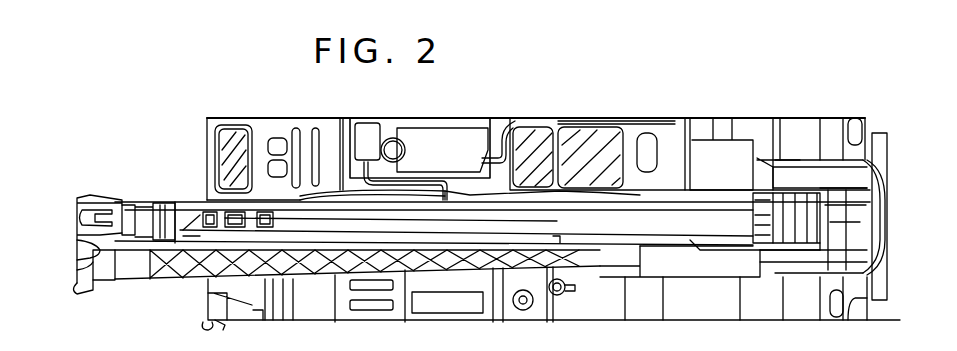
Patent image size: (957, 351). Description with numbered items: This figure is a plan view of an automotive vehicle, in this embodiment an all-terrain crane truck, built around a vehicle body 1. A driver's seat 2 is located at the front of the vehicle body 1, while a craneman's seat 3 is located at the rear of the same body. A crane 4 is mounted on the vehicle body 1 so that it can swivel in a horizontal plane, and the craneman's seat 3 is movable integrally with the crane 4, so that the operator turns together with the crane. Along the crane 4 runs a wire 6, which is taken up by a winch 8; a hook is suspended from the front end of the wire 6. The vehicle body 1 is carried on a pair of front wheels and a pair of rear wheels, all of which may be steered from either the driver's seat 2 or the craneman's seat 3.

The vehicle body 1 is at (447, 113).
The driver's seat 2 is at (262, 128).
The craneman's seat 3 is at (578, 124).
The crane 4 is at (410, 233).
The wire 6 is at (697, 210).
The winch 8 is at (890, 226).